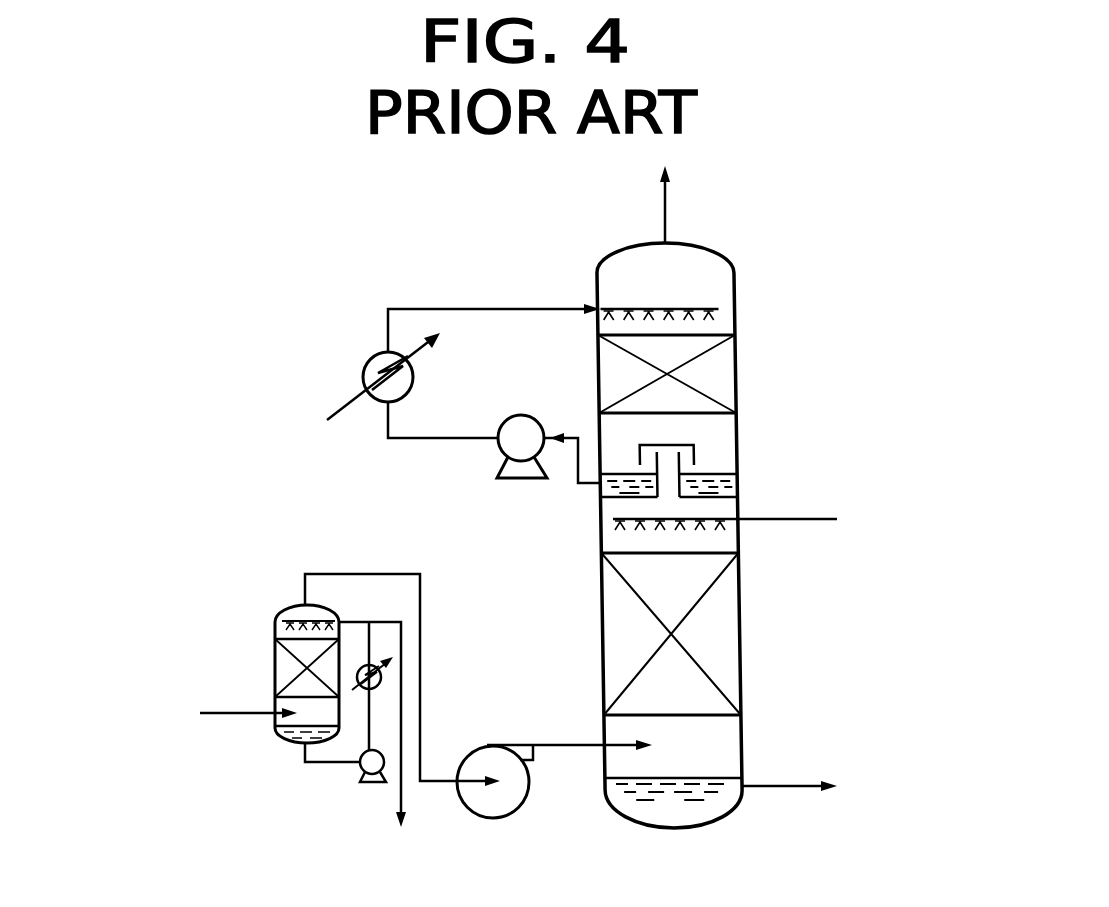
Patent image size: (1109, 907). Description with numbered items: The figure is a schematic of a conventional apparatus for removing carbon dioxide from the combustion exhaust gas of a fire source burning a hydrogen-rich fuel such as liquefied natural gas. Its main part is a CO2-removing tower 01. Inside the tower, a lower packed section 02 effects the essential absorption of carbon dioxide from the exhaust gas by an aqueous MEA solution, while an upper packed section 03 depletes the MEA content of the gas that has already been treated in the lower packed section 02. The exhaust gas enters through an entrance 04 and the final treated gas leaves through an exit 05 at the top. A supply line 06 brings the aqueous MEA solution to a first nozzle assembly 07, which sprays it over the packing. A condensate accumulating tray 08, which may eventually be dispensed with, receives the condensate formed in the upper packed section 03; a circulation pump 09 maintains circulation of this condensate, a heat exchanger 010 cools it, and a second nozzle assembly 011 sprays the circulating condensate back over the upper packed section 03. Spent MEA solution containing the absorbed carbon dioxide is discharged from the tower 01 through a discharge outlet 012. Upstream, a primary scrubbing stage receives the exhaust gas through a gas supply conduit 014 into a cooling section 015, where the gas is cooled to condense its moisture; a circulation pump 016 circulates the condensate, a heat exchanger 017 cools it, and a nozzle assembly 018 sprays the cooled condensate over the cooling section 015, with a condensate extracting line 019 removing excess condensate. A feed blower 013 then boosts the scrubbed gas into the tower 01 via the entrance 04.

The CO2-removing tower 01 is at (752, 343).
The lower packed section 02 is at (720, 640).
The upper packed section 03 is at (713, 383).
The entrance 04 is at (597, 745).
The exit 05 is at (665, 243).
The supply line 06 is at (738, 518).
The first nozzle assembly 07 is at (627, 527).
The condensate accumulating tray 08 is at (695, 447).
The circulation pump 09 is at (518, 414).
The heat exchanger 010 is at (363, 370).
The second nozzle assembly 011 is at (697, 307).
The discharge outlet 012 is at (743, 787).
The feed blower 013 is at (517, 813).
The gas supply conduit 014 is at (272, 713).
The cooling section 015 is at (275, 660).
The circulation pump 016 is at (362, 768).
The heat exchanger 017 is at (380, 675).
The nozzle assembly 018 is at (298, 620).
The condensate extracting line 019 is at (412, 797).